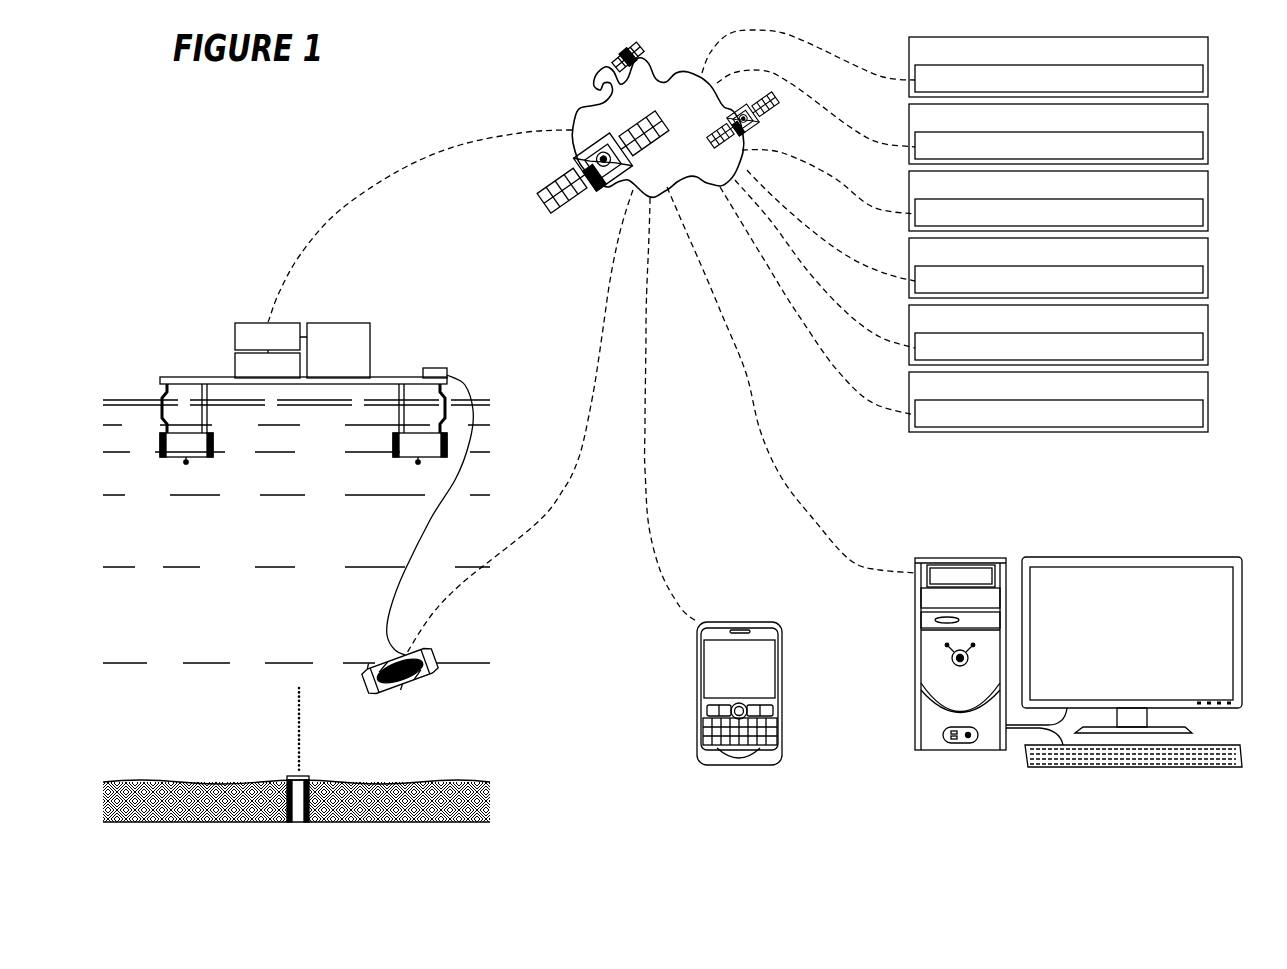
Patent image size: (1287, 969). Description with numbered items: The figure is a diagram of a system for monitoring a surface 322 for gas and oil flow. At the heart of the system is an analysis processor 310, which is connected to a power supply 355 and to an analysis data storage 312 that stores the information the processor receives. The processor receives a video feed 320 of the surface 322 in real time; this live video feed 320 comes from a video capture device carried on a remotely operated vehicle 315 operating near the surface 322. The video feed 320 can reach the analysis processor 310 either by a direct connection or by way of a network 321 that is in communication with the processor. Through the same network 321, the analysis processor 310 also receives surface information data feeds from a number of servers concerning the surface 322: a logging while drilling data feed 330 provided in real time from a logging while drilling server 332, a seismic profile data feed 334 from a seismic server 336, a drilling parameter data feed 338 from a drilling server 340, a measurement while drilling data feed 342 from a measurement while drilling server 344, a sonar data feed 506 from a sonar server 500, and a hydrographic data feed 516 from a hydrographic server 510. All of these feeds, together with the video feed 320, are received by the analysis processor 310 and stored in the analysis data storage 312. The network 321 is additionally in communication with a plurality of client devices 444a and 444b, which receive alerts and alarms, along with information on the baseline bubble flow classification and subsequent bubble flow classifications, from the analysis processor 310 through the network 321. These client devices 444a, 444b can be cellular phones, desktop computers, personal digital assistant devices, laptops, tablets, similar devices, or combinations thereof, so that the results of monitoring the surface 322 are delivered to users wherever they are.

The network 321 is at (598, 85).
The video feed 320 is at (568, 482).
The analysis processor 310 is at (284, 347).
The analysis data storage 312 is at (284, 376).
The power supply 355 is at (354, 361).
The remotely operated vehicle 315 is at (433, 677).
The surface 322 is at (276, 770).
The drilling server 340 is at (1208, 51).
The drilling parameter data feed 338 is at (1203, 78).
The measurement while drilling server 344 is at (1208, 118).
The measurement while drilling data feed 342 is at (1203, 145).
The seismic server 336 is at (1208, 185).
The seismic profile data feed 334 is at (1203, 212).
The logging while drilling server 332 is at (1208, 252).
The logging while drilling data feed 330 is at (1203, 279).
The sonar server 500 is at (1208, 319).
The sonar data feed 506 is at (1203, 346).
The hydrographic server 510 is at (1208, 386).
The hydrographic data feed 516 is at (1203, 413).
The client device 444a is at (915, 653).
The client device 444b is at (738, 622).